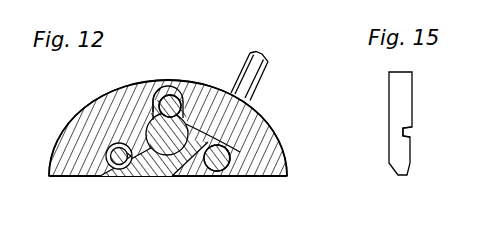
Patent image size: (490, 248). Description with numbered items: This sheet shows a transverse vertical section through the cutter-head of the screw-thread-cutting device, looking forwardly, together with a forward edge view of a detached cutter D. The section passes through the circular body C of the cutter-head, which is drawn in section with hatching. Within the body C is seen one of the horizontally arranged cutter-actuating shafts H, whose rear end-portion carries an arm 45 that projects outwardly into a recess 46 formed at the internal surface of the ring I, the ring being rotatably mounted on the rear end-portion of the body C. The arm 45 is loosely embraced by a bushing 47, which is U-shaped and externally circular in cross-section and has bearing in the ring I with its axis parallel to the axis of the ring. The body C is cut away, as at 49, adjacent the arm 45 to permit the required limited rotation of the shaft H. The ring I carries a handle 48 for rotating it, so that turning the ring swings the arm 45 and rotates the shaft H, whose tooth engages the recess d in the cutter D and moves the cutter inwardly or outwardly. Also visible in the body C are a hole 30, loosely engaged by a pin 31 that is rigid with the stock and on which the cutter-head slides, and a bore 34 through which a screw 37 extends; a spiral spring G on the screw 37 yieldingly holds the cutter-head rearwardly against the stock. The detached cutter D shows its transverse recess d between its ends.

In FIG. 12, the arm 45 is at (155, 102).
In FIG. 12, the recess 46 is at (182, 93).
In FIG. 12, the bushing 47 is at (169, 86).
In FIG. 12, the handle 48 is at (270, 68).
In FIG. 12, the cut-away 49 is at (148, 124).
In FIG. 12, the ring I is at (254, 110).
In FIG. 12, the spiral spring G is at (107, 174).
In FIG. 12, the shaft H is at (158, 163).
In FIG. 12, the body C is at (183, 171).
In FIG. 12, the bore 34 is at (116, 170).
In FIG. 12, the screw 37 is at (129, 165).
In FIG. 12, the hole 30 is at (212, 172).
In FIG. 12, the pin 31 is at (229, 160).
In FIG. 15, the cutter D is at (405, 89).
In FIG. 15, the recess d is at (410, 132).